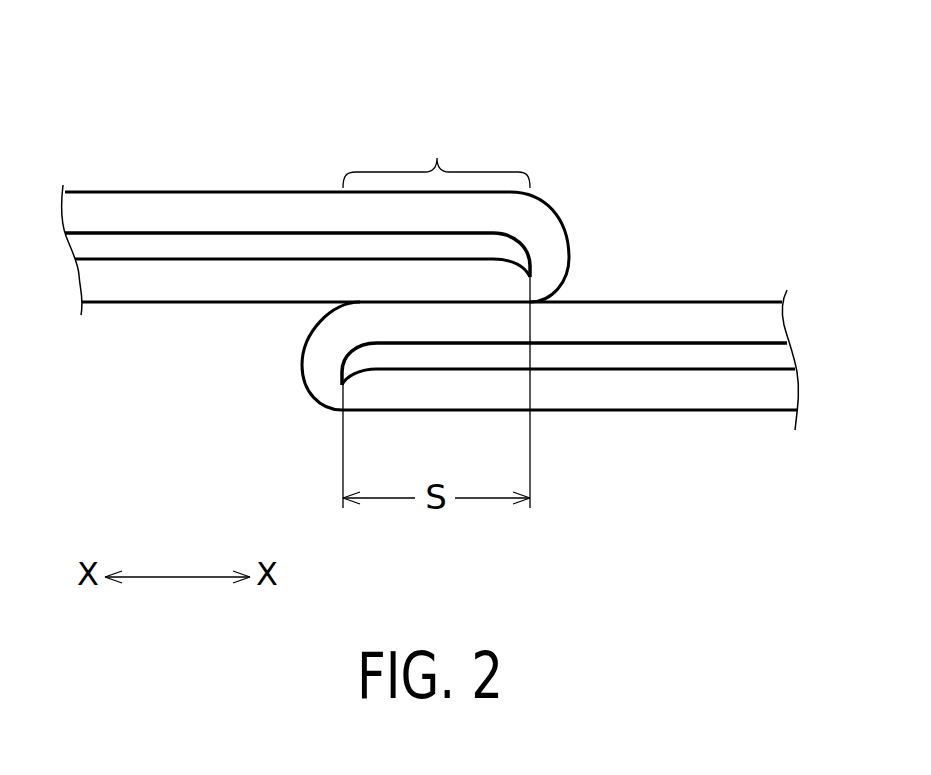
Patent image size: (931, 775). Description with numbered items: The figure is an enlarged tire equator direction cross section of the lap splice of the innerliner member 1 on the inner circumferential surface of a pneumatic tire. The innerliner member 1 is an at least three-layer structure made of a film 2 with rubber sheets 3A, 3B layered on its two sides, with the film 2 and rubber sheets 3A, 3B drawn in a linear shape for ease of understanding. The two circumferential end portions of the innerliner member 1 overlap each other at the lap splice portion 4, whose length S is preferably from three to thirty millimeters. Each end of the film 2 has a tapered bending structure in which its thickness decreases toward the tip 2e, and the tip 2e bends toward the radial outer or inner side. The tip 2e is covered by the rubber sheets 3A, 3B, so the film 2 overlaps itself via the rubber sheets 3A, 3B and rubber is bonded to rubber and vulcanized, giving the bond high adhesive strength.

The innerliner member 1 is at (443, 275).
The film 2 is at (250, 243).
The tip 2e is at (530, 277).
The rubber sheet 3A is at (143, 290).
The rubber sheet 3B is at (106, 203).
The lap splice portion 4 is at (436, 154).